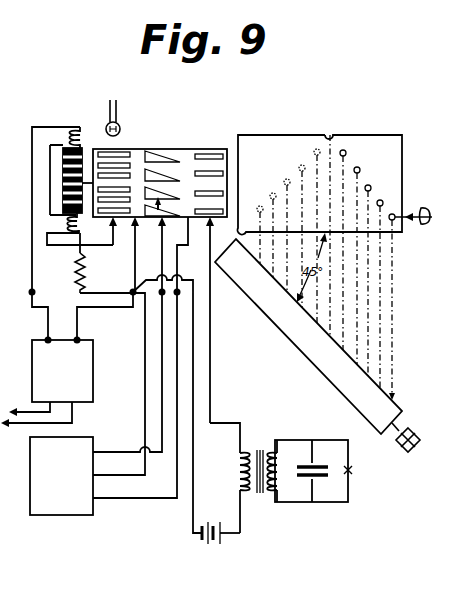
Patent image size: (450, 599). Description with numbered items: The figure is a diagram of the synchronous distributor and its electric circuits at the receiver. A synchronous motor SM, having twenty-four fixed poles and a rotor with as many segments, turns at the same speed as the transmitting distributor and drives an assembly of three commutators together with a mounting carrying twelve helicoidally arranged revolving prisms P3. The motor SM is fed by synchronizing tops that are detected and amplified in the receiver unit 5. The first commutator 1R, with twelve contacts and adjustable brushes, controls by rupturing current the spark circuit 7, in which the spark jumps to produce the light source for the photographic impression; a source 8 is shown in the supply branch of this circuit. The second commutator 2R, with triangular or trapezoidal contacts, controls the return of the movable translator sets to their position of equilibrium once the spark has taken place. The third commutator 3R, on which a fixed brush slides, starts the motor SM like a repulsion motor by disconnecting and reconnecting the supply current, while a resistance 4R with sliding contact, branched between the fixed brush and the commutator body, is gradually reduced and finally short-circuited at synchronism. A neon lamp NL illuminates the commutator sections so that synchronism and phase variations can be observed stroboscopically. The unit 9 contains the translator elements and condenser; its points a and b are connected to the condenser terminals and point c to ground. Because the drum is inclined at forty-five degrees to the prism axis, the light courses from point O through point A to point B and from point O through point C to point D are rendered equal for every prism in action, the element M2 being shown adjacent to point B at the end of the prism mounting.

The amplifier 5 is at (47, 383).
The spark circuit 7 is at (320, 471).
The battery 8 is at (221, 543).
The unit 9 is at (61, 476).
The third commutator 3R is at (114, 175).
The second commutator 2R is at (162, 176).
The first commutator 1R is at (209, 176).
The resistance 4R is at (86, 275).
The synchronous motor SM is at (86, 142).
The neon lamp NL is at (124, 118).
The photocell M2 is at (406, 447).
The revolving prisms P3 is at (326, 267).
The point a is at (114, 443).
The point b is at (121, 507).
The point c is at (116, 467).
The point A is at (380, 219).
The point B is at (405, 401).
The point C is at (250, 212).
The point D is at (248, 247).
The point O is at (413, 206).